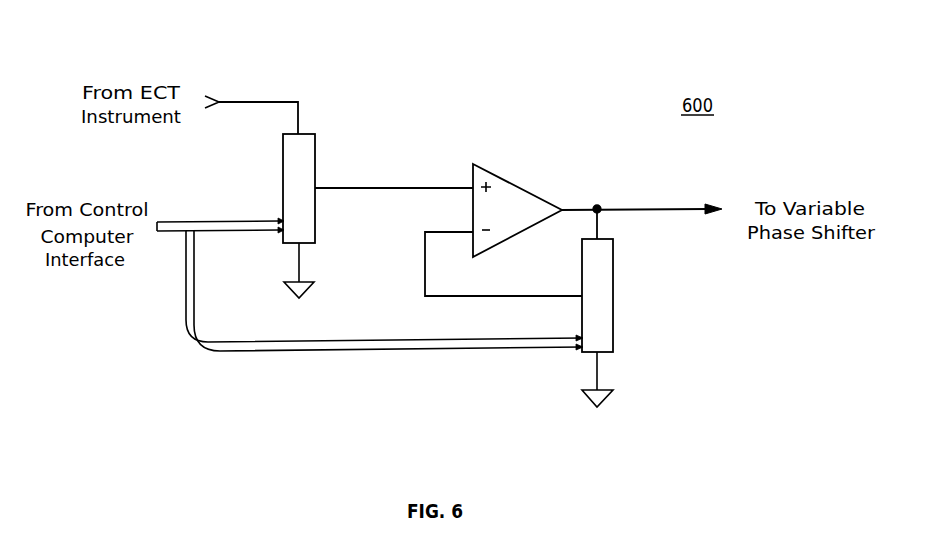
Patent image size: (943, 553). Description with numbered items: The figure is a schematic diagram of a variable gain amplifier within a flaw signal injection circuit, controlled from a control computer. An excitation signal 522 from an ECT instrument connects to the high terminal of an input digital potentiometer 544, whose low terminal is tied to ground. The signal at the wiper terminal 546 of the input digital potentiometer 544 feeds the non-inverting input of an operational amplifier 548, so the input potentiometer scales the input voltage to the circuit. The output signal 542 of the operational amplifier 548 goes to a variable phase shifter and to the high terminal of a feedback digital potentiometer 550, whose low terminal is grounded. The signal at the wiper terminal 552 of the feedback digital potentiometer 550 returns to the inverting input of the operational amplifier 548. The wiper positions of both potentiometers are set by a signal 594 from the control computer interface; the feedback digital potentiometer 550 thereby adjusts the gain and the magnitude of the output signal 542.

The excitation signal 522 is at (248, 100).
The input digital potentiometer 544 is at (318, 154).
The wiper terminal 546 is at (392, 170).
The operational amplifier 548 is at (518, 170).
The output signal 542 is at (658, 198).
The wiper terminal 552 is at (408, 266).
The feedback digital potentiometer 550 is at (627, 325).
The signal from the control computer interface 594 is at (205, 205).